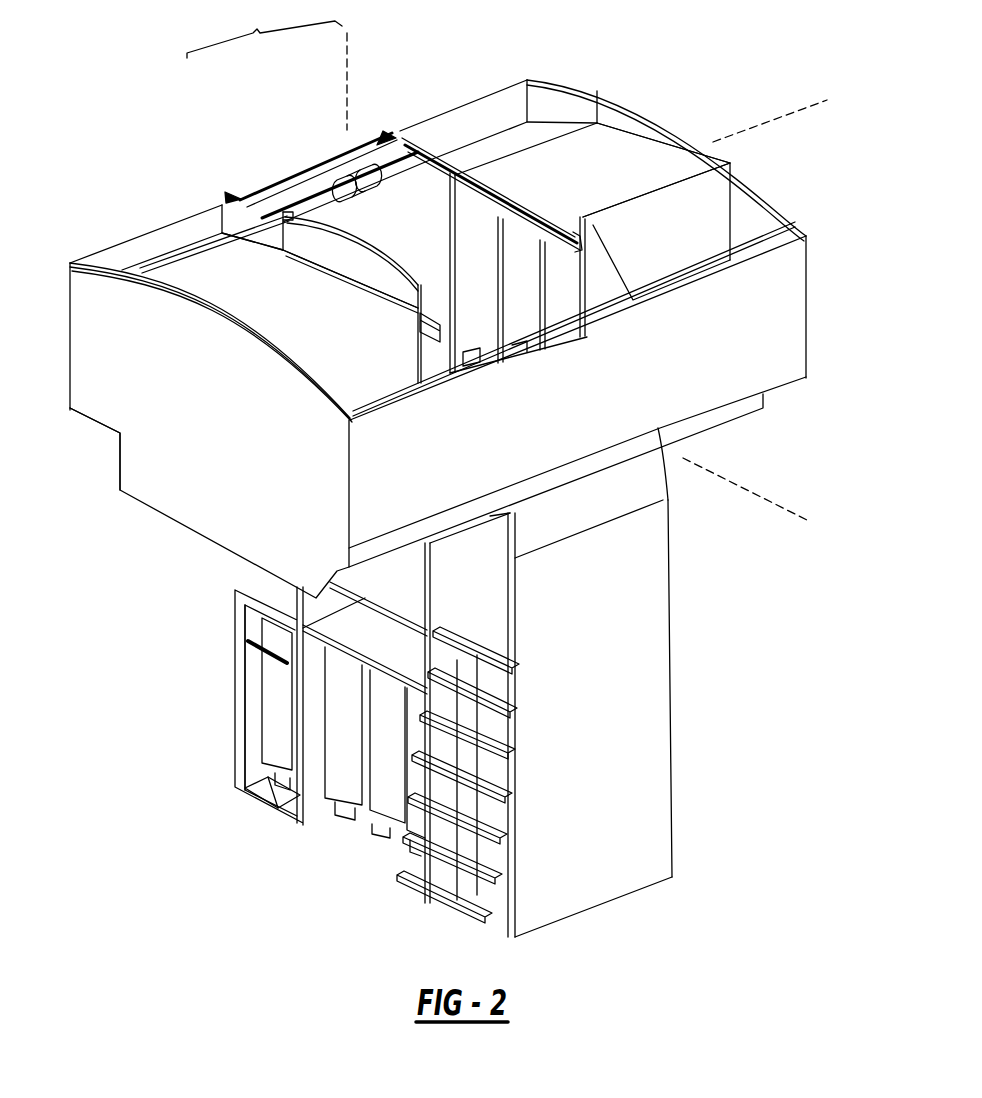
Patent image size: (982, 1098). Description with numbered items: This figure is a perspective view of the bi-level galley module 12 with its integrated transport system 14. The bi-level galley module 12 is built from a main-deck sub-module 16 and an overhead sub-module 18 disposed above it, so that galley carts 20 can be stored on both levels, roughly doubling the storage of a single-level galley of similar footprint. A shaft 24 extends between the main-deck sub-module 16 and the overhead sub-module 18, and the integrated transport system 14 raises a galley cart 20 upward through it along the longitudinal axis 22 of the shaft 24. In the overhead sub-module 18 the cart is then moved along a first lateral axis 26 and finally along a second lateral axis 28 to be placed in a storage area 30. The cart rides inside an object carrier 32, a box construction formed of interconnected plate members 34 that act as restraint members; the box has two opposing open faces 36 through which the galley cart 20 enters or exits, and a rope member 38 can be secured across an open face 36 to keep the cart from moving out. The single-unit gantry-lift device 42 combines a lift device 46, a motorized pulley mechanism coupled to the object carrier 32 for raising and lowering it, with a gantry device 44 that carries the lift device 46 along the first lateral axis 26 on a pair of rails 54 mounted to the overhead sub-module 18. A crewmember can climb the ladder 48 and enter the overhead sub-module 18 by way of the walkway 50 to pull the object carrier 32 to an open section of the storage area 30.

The bi-level galley module 12 is at (165, 196).
The integrated transport system 14 is at (264, 29).
The main-deck sub-module 16 is at (674, 878).
The overhead sub-module 18 is at (70, 408).
The galley cart 20 is at (469, 276).
The longitudinal axis 22 is at (347, 33).
The shaft 24 is at (242, 618).
The first lateral axis 26 is at (781, 510).
The second lateral axis 28 is at (803, 112).
The storage area 30 is at (347, 310).
The object carrier 32 is at (246, 790).
The plate members 34 is at (275, 610).
The open faces 36 is at (270, 795).
The rope member 38 is at (262, 655).
The single-unit gantry-lift device 42 is at (298, 153).
The gantry device 44 is at (440, 142).
The lift device 46 is at (355, 172).
The ladder 48 is at (445, 905).
The walkway 50 is at (459, 596).
The rails 54 is at (577, 234).